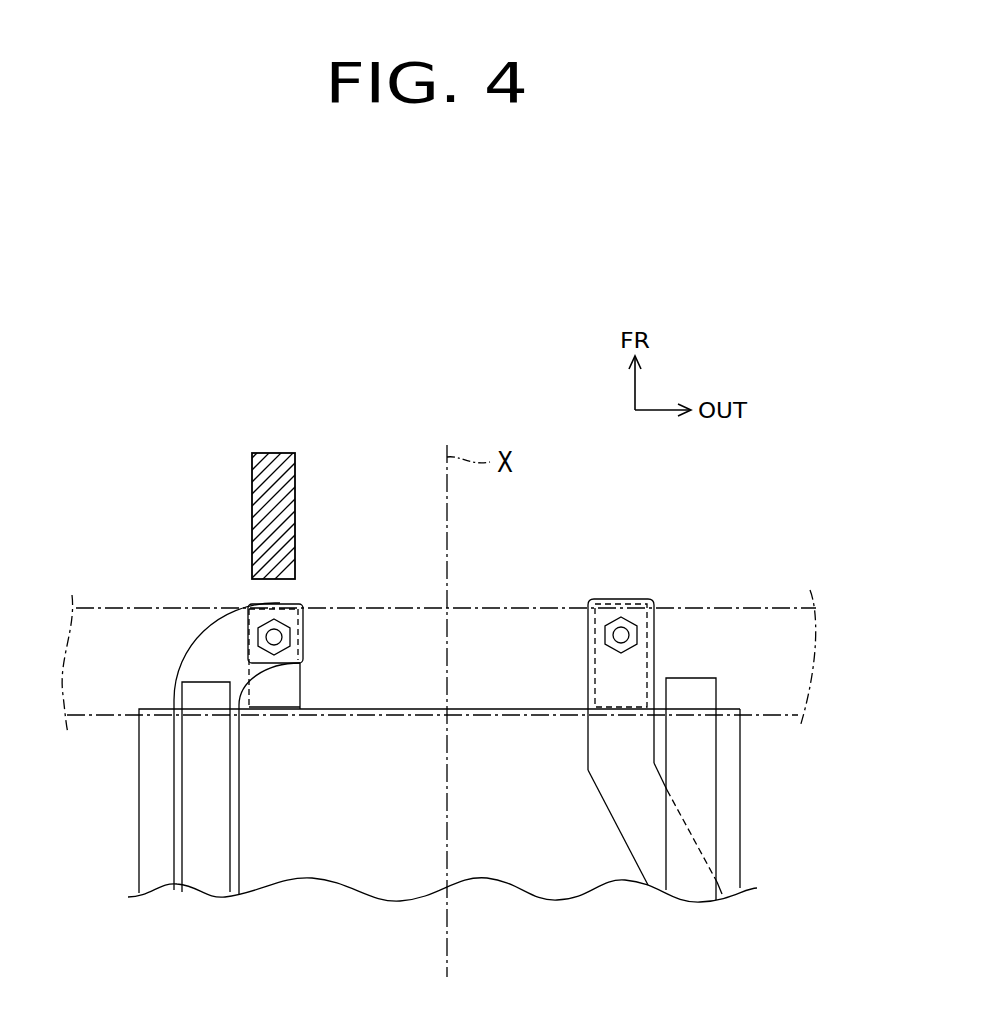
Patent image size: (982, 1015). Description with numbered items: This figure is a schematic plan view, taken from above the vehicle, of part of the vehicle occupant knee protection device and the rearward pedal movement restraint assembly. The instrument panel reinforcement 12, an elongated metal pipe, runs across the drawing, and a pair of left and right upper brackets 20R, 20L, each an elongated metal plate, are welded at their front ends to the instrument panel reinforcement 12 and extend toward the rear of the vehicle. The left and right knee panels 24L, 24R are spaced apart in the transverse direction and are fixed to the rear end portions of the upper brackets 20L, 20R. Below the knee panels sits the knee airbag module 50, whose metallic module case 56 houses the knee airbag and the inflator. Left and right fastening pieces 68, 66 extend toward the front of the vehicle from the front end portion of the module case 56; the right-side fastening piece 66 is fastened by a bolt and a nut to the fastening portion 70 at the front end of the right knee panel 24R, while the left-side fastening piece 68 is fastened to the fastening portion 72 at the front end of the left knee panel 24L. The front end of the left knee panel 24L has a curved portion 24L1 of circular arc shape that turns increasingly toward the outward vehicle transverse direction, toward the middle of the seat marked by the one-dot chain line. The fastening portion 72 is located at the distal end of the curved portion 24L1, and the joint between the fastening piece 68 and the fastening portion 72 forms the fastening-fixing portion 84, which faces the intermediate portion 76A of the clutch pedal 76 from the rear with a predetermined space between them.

The instrument panel reinforcement 12 is at (737, 606).
The knee airbag module 50 is at (742, 863).
The module case 56 is at (740, 808).
The left upper bracket 20L is at (182, 832).
The left knee panel 24L is at (174, 767).
The curved portion 24L1 is at (217, 620).
The left-side fastening piece 68 is at (301, 684).
The fastening portion 72 is at (302, 603).
The fastening-fixing portion 84 is at (322, 632).
The clutch pedal 76 is at (252, 486).
The intermediate portion 76A is at (252, 507).
The right knee panel 24R is at (613, 817).
The fastening portion 70 is at (593, 600).
The right-side fastening piece 66 is at (647, 653).
The right upper bracket 20R is at (718, 763).